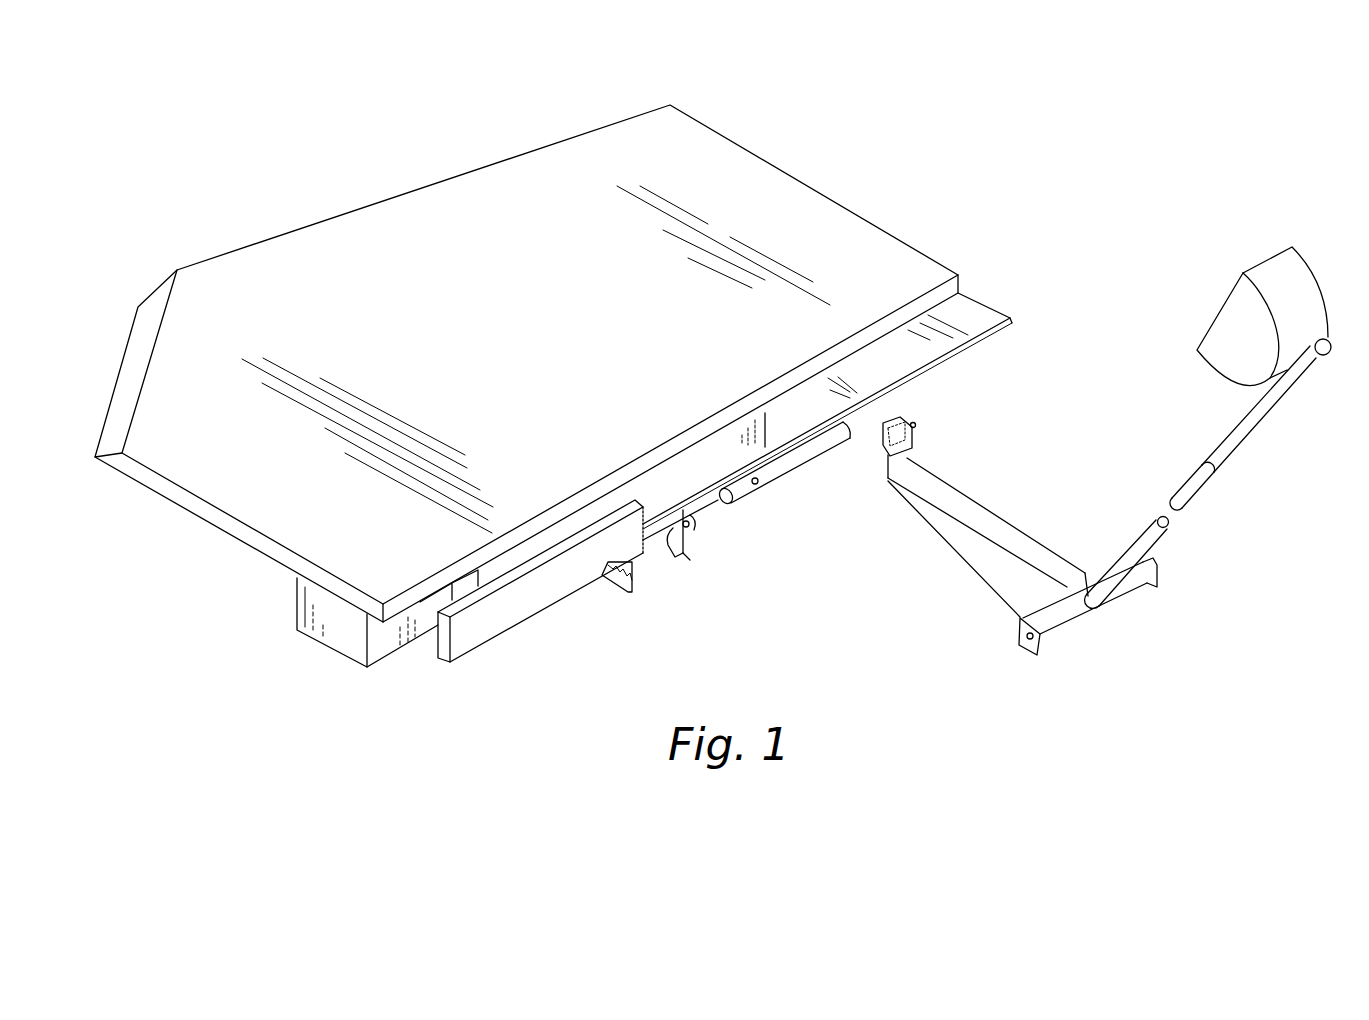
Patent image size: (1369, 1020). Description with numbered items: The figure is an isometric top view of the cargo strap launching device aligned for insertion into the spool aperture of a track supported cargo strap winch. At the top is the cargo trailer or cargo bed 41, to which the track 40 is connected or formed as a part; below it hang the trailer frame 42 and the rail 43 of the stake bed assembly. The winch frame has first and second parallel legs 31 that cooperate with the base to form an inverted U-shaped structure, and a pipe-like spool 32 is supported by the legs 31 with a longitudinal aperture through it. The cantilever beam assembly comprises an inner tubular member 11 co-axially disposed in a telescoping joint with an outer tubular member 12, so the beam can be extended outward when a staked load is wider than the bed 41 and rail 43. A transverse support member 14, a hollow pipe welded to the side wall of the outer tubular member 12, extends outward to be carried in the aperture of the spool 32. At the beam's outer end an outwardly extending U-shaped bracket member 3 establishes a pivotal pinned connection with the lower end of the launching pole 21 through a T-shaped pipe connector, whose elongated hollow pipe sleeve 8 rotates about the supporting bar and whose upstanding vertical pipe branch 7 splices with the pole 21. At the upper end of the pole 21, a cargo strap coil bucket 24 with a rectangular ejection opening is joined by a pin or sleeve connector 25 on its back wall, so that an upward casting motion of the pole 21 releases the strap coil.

The U-shaped bracket member 3 is at (1016, 617).
The vertical pipe branch 7 is at (1127, 557).
The elongated hollow pipe sleeve 8 is at (1068, 625).
The inner tubular member 11 is at (955, 488).
The outer tubular member 12 is at (873, 427).
The transverse support member 14 is at (771, 472).
The launching pole 21 is at (1195, 495).
The cargo strap coil bucket 24 is at (1220, 347).
The pin or sleeve connector 25 is at (1243, 432).
The legs 31 is at (625, 592).
The spool 32 is at (650, 555).
The track 40 is at (983, 312).
The cargo trailer or cargo bed 41 is at (453, 381).
The trailer frame 42 is at (340, 640).
The rail 43 is at (490, 627).